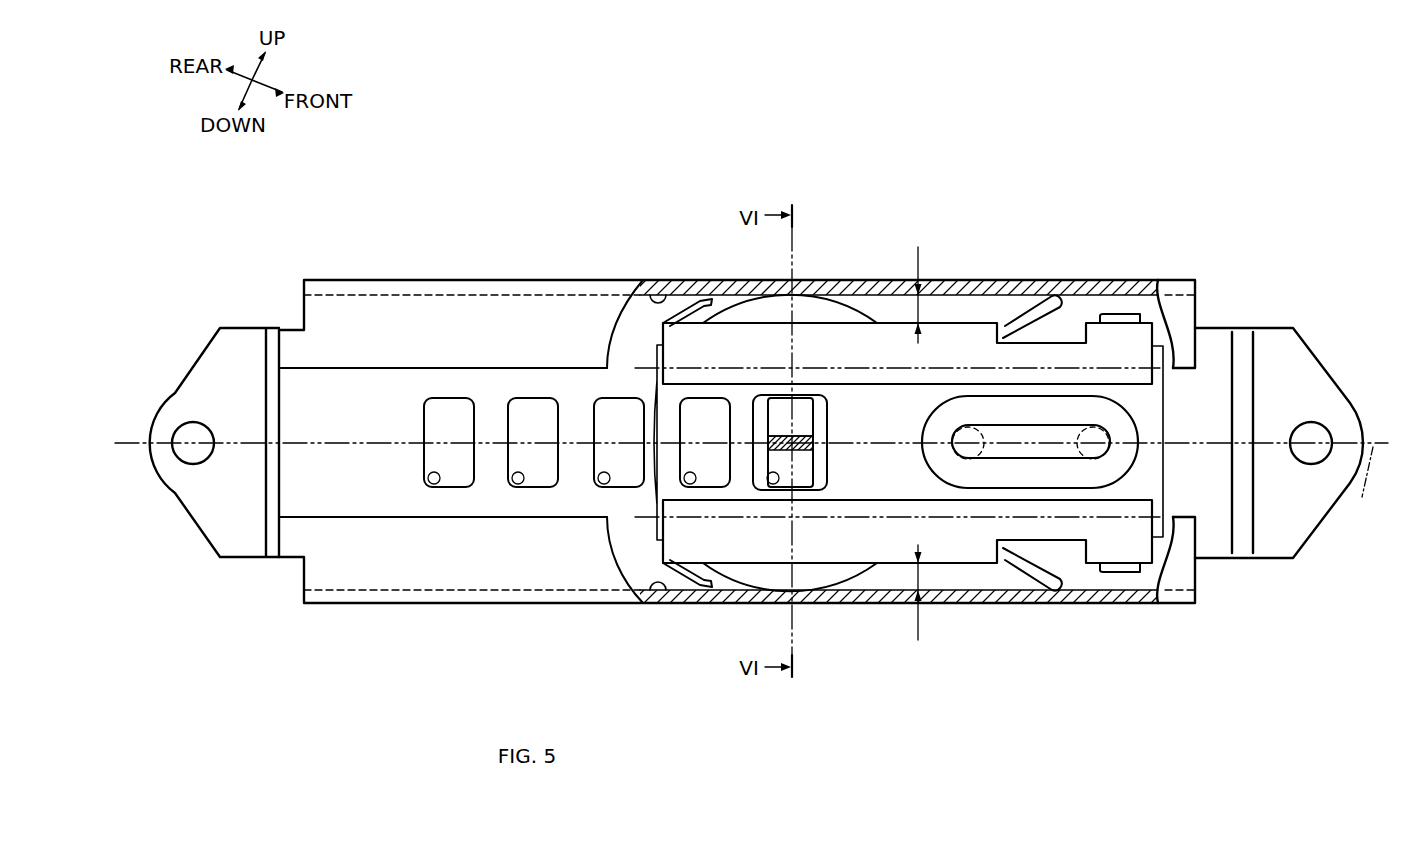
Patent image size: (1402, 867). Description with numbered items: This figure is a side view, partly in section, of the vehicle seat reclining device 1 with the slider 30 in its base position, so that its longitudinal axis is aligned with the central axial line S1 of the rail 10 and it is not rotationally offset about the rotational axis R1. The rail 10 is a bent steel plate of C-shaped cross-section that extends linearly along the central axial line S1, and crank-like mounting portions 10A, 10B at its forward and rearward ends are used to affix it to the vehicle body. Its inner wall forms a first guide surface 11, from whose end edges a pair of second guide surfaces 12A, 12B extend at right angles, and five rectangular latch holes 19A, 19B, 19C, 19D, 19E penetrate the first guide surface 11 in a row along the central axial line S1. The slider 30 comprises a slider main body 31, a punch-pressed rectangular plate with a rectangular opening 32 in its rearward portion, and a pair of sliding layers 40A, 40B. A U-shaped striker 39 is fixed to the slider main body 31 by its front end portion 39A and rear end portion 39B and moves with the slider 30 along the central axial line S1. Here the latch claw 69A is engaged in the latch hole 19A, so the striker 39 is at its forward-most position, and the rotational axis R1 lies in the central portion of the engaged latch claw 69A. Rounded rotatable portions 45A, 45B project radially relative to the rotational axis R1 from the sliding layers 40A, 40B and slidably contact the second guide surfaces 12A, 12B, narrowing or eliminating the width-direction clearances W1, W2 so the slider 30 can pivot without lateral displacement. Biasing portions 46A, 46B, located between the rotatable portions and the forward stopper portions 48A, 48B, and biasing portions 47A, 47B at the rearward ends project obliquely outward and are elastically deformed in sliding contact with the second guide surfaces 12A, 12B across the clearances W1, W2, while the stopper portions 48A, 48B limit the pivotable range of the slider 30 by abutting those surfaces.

The vehicle seat reclining device 1 is at (433, 246).
The rail 10 is at (344, 281).
The mounting portion 10A is at (1335, 418).
The mounting portion 10B is at (200, 400).
The first guide surface 11 is at (318, 465).
The second guide surface 12A is at (655, 300).
The second guide surface 12B is at (655, 603).
The latch hole 19A is at (776, 484).
The latch hole 19B is at (693, 484).
The latch hole 19C is at (607, 484).
The latch hole 19D is at (521, 484).
The latch hole 19E is at (437, 484).
The slider 30 is at (977, 323).
The slider main body 31 is at (1150, 453).
The opening 32 is at (822, 423).
The striker 39 is at (1033, 462).
The front end portion 39A is at (1091, 433).
The rear end portion 39B is at (967, 433).
The sliding layer 40A is at (947, 337).
The sliding layer 40B is at (948, 548).
The rotatable portion 45A is at (820, 305).
The rotatable portion 45B is at (820, 580).
The biasing portion 46A is at (1057, 300).
The biasing portion 46B is at (1057, 583).
The biasing portion 47A is at (702, 300).
The biasing portion 47B is at (703, 603).
The stopper portion 48A is at (1122, 317).
The stopper portion 48B is at (1122, 572).
The latch claw 69A is at (782, 434).
The rotational axis R1 is at (794, 450).
The central axial line S1 is at (1364, 486).
The clearance W1 is at (903, 294).
The clearance W2 is at (903, 592).